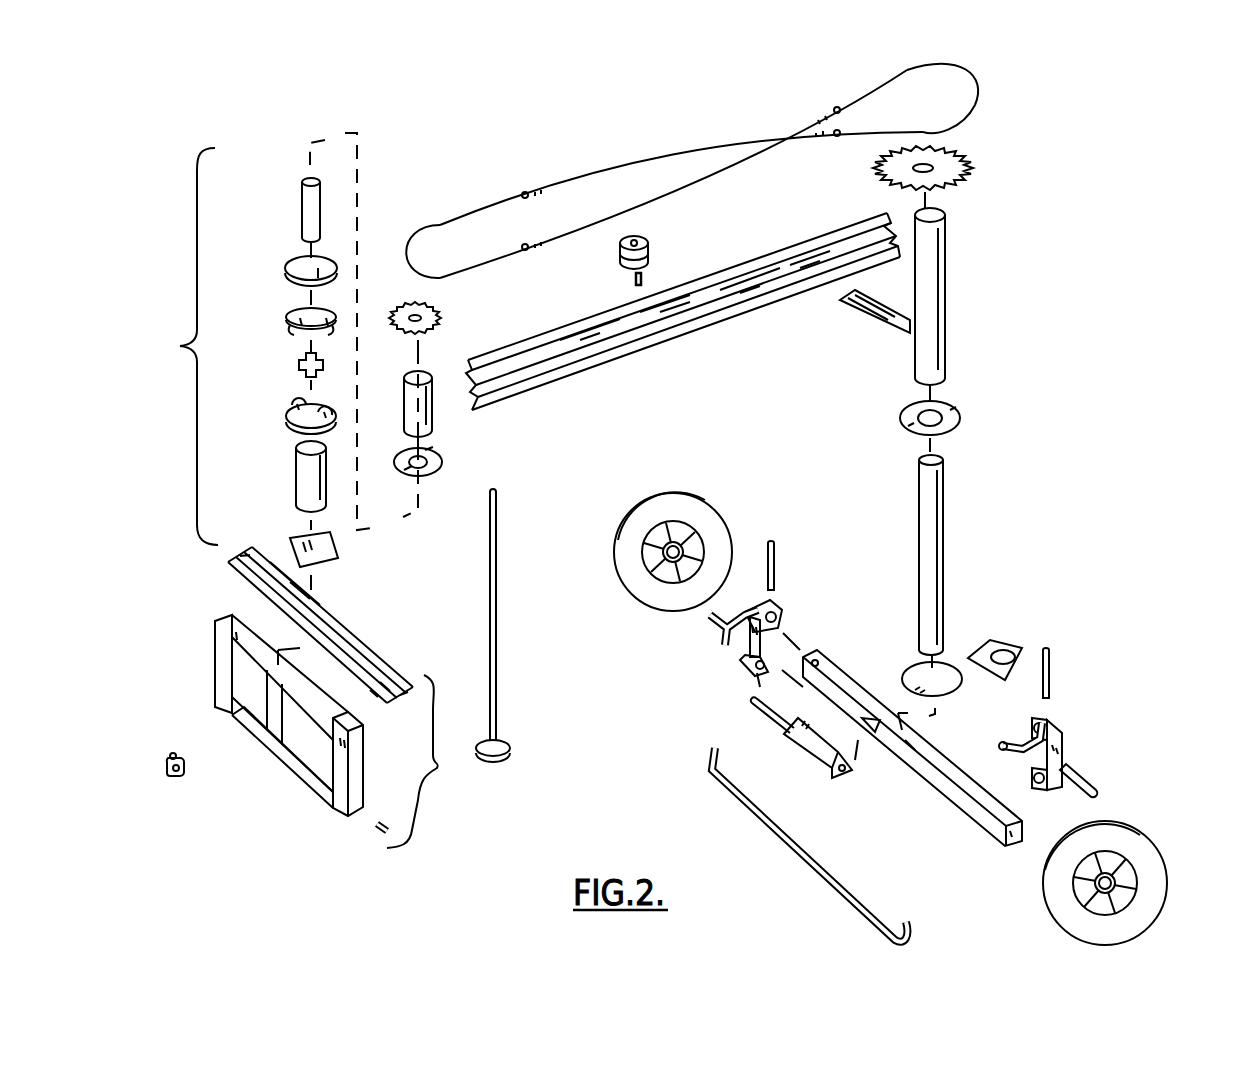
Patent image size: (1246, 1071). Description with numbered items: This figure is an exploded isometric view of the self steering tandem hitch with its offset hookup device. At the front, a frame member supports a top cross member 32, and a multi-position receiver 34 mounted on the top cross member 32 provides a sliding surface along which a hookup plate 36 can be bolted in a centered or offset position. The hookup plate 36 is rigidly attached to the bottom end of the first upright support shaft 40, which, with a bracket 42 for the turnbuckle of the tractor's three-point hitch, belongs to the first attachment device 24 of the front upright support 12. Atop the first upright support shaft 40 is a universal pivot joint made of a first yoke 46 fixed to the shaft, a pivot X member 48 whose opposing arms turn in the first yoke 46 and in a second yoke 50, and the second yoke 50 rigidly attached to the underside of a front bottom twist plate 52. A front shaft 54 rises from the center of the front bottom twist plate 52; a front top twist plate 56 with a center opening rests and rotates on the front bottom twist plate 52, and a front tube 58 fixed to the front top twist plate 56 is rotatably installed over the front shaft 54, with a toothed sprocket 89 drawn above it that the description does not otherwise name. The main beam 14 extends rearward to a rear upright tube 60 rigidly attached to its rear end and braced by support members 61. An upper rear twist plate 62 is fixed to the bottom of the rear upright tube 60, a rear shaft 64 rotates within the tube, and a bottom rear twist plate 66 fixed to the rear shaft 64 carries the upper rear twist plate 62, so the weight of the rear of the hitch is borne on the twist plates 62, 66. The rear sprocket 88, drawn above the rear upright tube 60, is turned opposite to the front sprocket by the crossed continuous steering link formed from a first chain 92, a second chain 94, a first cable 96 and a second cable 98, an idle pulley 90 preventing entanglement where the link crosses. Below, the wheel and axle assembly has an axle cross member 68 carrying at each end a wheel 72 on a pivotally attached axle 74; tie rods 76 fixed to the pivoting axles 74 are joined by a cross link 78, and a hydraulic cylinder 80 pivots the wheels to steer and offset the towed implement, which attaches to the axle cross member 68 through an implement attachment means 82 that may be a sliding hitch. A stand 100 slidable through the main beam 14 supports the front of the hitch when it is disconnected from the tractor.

The front upright support 12 is at (272, 339).
The main beam 14 is at (700, 335).
The first attachment device 24 is at (444, 761).
The top cross member 32 is at (213, 632).
The multi-position receiver 34 is at (222, 563).
The hookup plate 36 is at (297, 537).
The first upright support shaft 40 is at (294, 461).
The bracket 42 is at (207, 738).
The first yoke 46 is at (286, 413).
The pivot X member 48 is at (297, 363).
The second yoke 50 is at (288, 319).
The front bottom twist plate 52 is at (286, 272).
The front shaft 54 is at (300, 186).
The front top twist plate 56 is at (430, 475).
The front tube 58 is at (402, 381).
The rear upright tube 60 is at (946, 240).
The support members 61 is at (880, 320).
The upper rear twist plate 62 is at (960, 413).
The rear shaft 64 is at (945, 479).
The bottom rear twist plate 66 is at (958, 663).
The axle cross member 68 is at (985, 823).
The wheel 72 is at (1140, 833).
The pivotally attached axle 74 is at (1068, 742).
The tie rods 76 is at (1000, 746).
The cross link 78 is at (754, 812).
The hydraulic cylinder 80 is at (828, 787).
The implement attachment means 82 is at (1018, 647).
The rear sprocket 88 is at (974, 168).
The gear 89 is at (441, 319).
The idle pulley 90 is at (618, 250).
The first chain 92 is at (447, 217).
The second chain 94 is at (973, 88).
The first cable 96 is at (702, 183).
The second cable 98 is at (600, 172).
The stand 100 is at (487, 628).